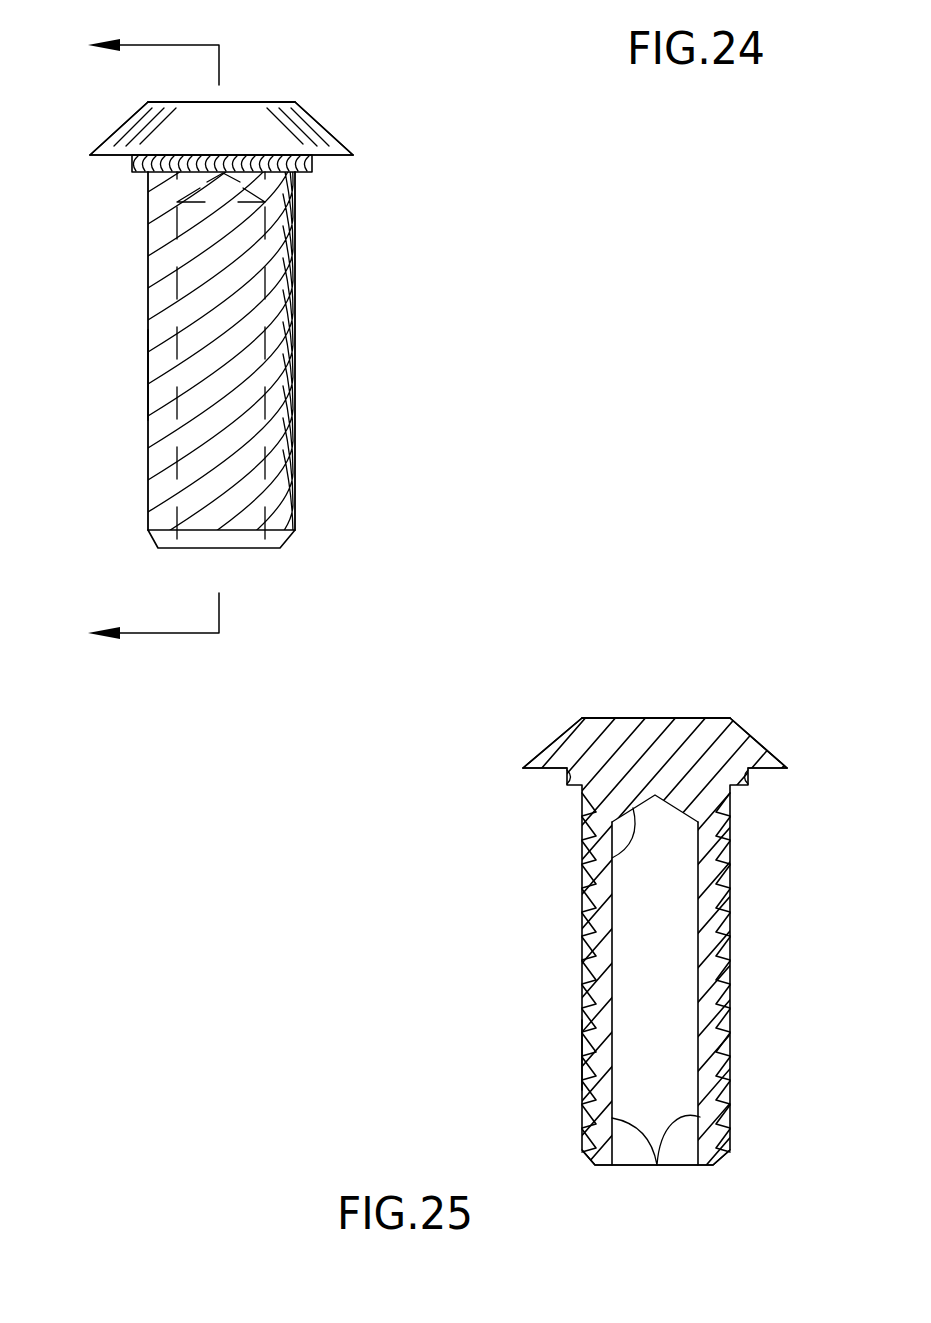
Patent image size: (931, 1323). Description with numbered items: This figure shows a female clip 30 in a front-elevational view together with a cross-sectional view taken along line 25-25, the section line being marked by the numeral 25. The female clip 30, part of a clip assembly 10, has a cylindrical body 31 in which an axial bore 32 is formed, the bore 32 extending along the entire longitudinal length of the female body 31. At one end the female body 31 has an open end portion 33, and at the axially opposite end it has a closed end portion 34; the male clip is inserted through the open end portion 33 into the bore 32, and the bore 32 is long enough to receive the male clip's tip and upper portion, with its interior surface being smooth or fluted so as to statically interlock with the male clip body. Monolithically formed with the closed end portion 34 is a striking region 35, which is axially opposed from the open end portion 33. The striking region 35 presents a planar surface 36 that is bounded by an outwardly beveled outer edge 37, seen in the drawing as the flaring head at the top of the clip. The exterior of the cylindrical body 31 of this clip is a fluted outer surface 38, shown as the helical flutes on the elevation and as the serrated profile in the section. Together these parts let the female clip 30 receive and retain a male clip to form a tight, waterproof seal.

In FIG. 24, the fastener insert assembly 10 is at (347, 112).
In FIG. 25, the fastener insert assembly 10 is at (710, 682).
In FIG. 24, the line 25- 25 is at (124, 337).
In FIG. 24, the female clip 30 is at (302, 300).
In FIG. 25, the female clip 30 is at (578, 958).
In FIG. 24, the cylindrical body 31 is at (285, 372).
In FIG. 25, the cylindrical body 31 is at (730, 872).
In FIG. 25, the axial bore 32 is at (612, 1000).
In FIG. 24, the open end portion 33 is at (248, 548).
In FIG. 25, the open end portion 33 is at (658, 1165).
In FIG. 25, the closed end portion 34 is at (632, 850).
In FIG. 24, the striking region 35 is at (296, 102).
In FIG. 25, the striking region 35 is at (730, 718).
In FIG. 24, the planar surface 36 is at (250, 102).
In FIG. 25, the planar surface 36 is at (667, 718).
In FIG. 24, the outwardly beveled outer edge 37 is at (337, 132).
In FIG. 25, the outwardly beveled outer edge 37 is at (748, 735).
In FIG. 24, the fluted outer surface 38 is at (162, 412).
In FIG. 25, the fluted outer surface 38 is at (585, 1052).